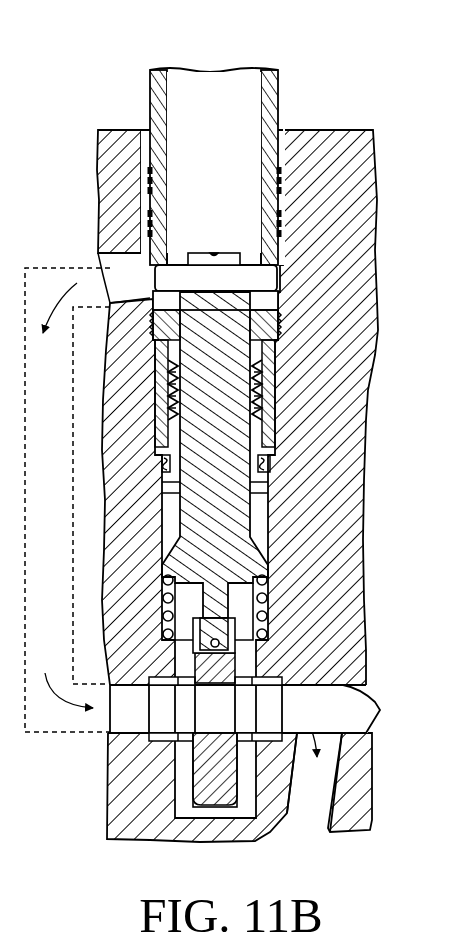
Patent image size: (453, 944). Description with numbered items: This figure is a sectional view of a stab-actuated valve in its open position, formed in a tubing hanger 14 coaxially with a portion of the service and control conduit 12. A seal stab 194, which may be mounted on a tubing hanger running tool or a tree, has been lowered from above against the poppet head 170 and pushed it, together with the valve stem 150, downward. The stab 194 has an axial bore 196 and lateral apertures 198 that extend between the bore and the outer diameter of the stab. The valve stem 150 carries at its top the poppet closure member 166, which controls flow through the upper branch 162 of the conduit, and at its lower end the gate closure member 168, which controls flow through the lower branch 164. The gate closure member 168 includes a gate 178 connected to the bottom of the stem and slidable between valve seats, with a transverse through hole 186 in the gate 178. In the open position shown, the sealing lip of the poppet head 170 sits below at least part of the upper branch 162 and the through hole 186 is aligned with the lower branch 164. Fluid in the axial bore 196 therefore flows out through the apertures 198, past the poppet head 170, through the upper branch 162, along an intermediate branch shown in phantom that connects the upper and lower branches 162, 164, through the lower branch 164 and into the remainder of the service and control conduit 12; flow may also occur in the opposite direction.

The service and control conduit 12 is at (323, 806).
The tubing hanger 14 is at (365, 452).
The valve stem 150 is at (215, 455).
The upper branch 162 is at (98, 256).
The lower branch 164 is at (376, 702).
The poppet closure member 166 is at (252, 258).
The gate closure member 168 is at (183, 766).
The poppet head 170 is at (280, 279).
The gate 178 is at (258, 648).
The transverse through hole 186 is at (258, 678).
The seal stab 194 is at (280, 104).
The axial bore 196 is at (214, 162).
The lateral apertures 198 is at (216, 256).